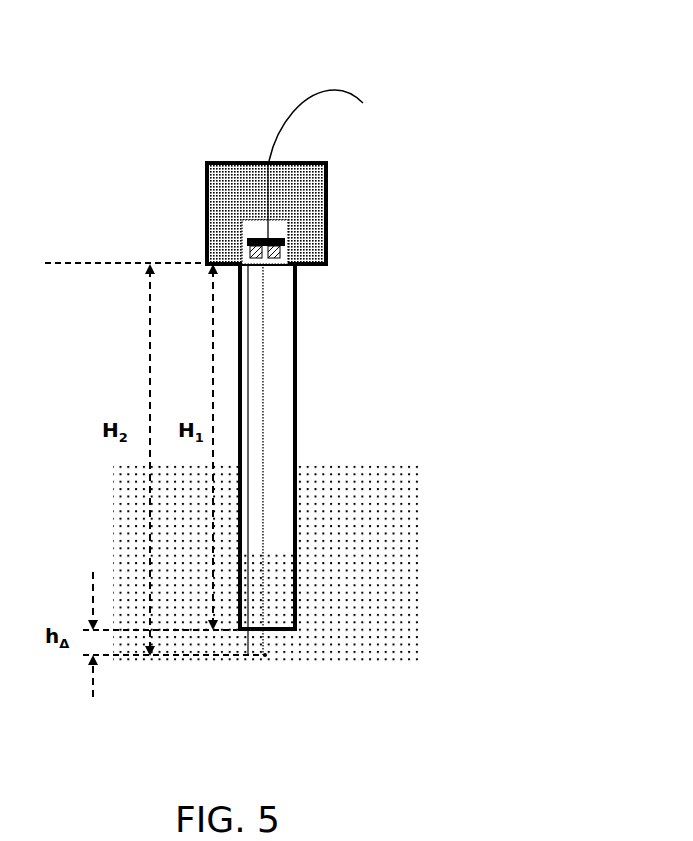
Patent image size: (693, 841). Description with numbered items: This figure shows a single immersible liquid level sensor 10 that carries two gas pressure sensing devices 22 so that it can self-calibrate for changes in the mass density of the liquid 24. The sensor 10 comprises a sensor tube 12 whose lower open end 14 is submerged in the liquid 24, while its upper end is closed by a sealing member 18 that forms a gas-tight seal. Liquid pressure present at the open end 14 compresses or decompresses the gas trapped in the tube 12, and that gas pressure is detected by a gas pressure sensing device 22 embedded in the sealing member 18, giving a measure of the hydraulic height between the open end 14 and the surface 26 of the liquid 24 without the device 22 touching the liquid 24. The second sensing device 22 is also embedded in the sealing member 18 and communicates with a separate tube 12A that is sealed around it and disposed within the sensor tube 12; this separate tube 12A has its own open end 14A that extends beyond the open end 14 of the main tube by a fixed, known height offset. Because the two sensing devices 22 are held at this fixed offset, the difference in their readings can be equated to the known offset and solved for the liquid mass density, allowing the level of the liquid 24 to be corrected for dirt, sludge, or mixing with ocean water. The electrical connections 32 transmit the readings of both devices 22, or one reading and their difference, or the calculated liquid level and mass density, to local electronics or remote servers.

The liquid level sensor 10 is at (511, 252).
The sensor tube 12 is at (298, 378).
The separate tube 12A is at (265, 335).
The lower open end 14 is at (296, 630).
The open end 14A is at (265, 655).
The sealing member 18 is at (319, 172).
The gas pressure sensing device 22 is at (243, 250).
The liquid 24 is at (375, 603).
The surface 26 is at (391, 462).
The electrical connections 32 is at (296, 108).